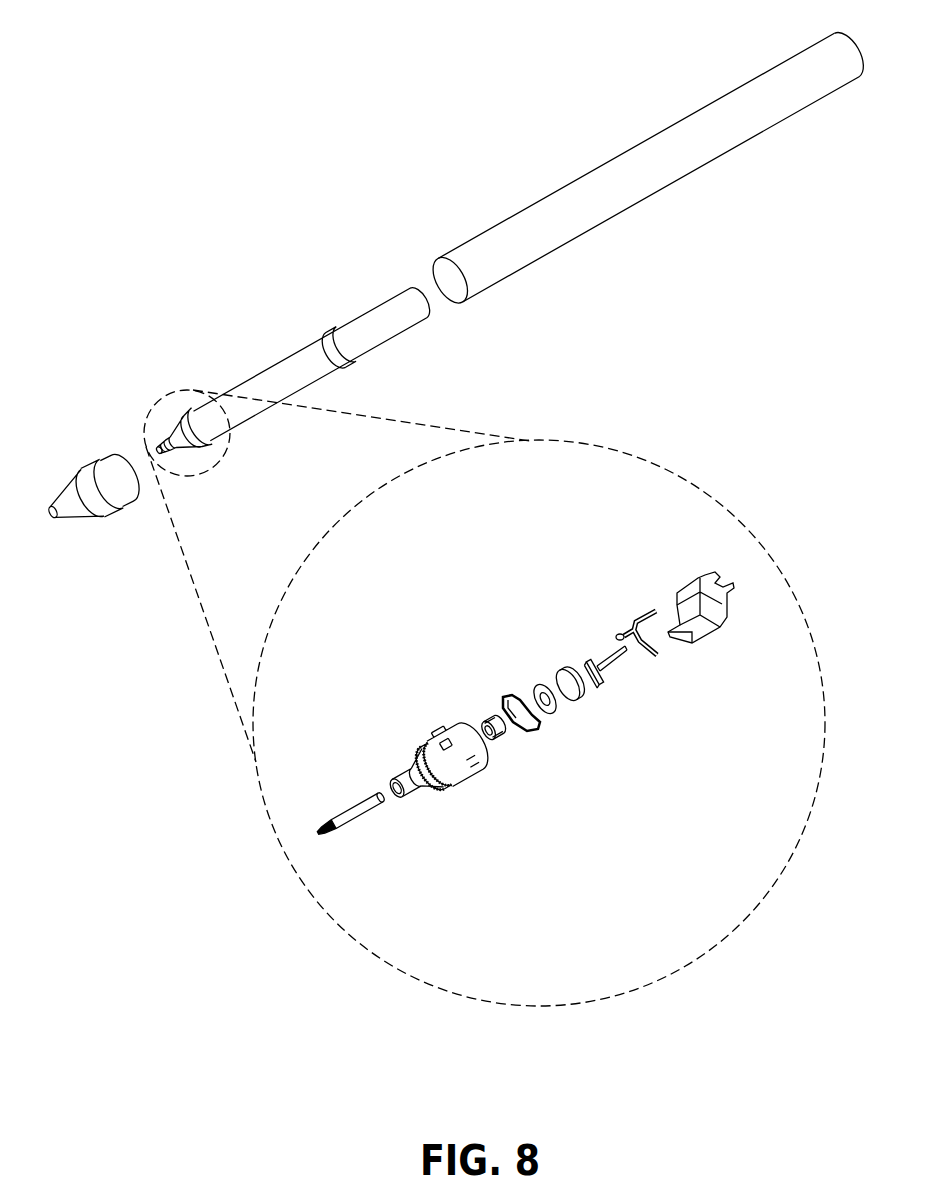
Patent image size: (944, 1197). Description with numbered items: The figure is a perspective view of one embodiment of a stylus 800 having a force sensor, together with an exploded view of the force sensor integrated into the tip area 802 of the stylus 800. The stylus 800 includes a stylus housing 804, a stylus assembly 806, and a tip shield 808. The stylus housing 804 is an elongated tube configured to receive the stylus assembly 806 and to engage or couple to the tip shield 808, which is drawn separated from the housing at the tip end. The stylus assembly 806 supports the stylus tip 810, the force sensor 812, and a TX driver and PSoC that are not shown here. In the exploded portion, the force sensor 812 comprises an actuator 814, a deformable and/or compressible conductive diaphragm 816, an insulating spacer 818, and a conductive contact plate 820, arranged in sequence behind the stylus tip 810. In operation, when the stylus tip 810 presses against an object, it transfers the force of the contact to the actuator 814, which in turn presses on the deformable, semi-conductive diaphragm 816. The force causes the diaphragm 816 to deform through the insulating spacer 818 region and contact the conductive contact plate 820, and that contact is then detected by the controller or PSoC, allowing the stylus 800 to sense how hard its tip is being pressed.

The stylus 800 is at (222, 136).
The tip area 802 is at (235, 458).
The stylus housing 804 is at (618, 217).
The stylus assembly 806 is at (399, 269).
The tip shield 808 is at (70, 518).
The stylus tip 810 is at (346, 804).
The force sensor 812 is at (550, 661).
The actuator 814 is at (500, 740).
The conductive diaphragm 816 is at (518, 699).
The insulating spacer 818 is at (552, 716).
The conductive contact plate 820 is at (536, 660).